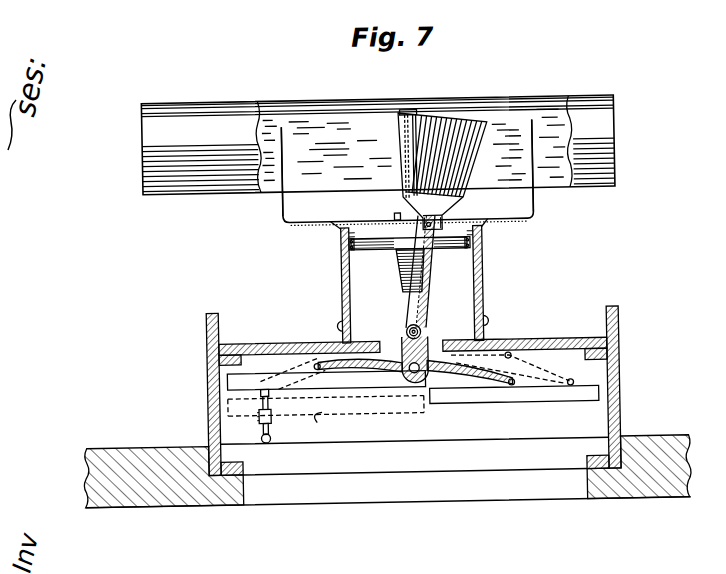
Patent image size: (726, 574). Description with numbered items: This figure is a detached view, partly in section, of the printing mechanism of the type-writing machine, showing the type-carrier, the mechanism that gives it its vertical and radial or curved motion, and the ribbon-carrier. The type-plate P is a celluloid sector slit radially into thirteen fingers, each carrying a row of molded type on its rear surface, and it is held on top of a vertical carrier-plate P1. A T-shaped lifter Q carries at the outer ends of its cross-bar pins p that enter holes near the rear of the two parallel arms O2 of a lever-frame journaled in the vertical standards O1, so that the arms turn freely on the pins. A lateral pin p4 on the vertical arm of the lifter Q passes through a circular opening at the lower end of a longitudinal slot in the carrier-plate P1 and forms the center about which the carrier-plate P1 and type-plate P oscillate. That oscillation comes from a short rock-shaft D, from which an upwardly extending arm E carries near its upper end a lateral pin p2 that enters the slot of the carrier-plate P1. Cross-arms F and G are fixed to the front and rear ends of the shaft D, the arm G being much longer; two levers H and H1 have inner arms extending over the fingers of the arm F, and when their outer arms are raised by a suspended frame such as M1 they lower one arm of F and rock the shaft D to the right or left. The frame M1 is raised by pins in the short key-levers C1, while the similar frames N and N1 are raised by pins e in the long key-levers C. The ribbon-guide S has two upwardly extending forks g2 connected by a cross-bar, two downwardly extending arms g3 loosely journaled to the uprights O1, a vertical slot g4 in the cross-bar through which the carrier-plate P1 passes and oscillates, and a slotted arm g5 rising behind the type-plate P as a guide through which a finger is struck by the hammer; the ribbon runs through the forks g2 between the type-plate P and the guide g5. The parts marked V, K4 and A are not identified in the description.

The support timber V is at (378, 145).
The casing K4 is at (405, 142).
The slotted arm g5 is at (418, 111).
The forks g2 is at (287, 203).
The ribbon-guide S is at (282, 226).
The vertical slot g4 is at (388, 220).
The lateral pin p2 is at (449, 222).
The type-plate P is at (443, 170).
The pins p is at (341, 247).
The parallel arms O2 is at (412, 258).
The T-shaped lifter Q is at (409, 265).
The downwardly-extending arms g3 is at (496, 296).
The vertical standards O1 is at (351, 305).
The carrier-plate P1 is at (428, 298).
The lateral pin p4 is at (406, 333).
The arm E is at (421, 333).
The rock-shaft D is at (420, 383).
The cross-arm F is at (384, 373).
The base A is at (395, 470).
The frame N1 is at (326, 379).
The frame N is at (557, 398).
The lever H1 is at (330, 370).
The short key-levers C1 is at (413, 374).
The cross-arm G is at (478, 381).
The lever H is at (545, 371).
The pins e is at (259, 395).
The long key-levers C is at (257, 417).
The frame M1 is at (326, 417).